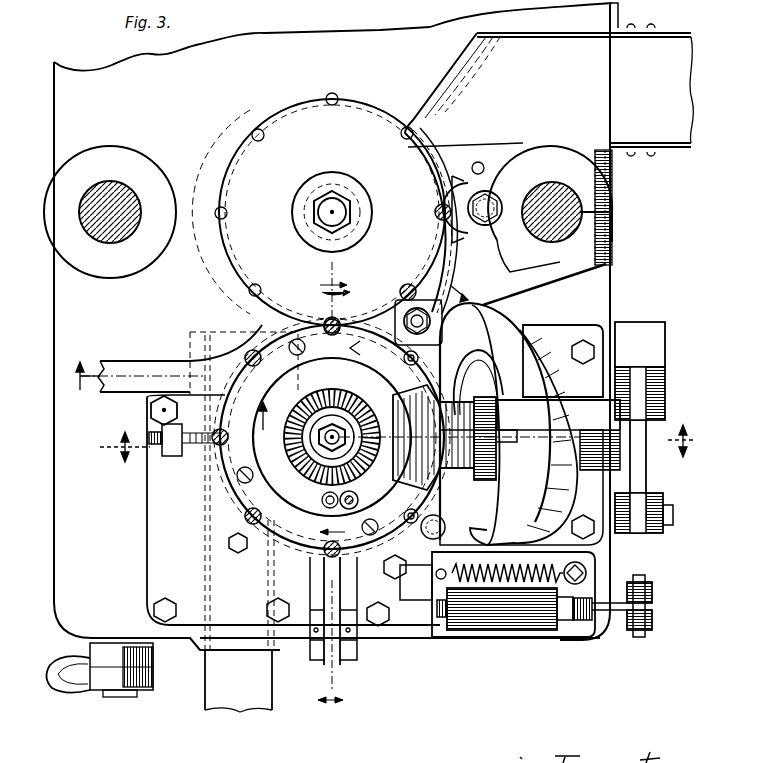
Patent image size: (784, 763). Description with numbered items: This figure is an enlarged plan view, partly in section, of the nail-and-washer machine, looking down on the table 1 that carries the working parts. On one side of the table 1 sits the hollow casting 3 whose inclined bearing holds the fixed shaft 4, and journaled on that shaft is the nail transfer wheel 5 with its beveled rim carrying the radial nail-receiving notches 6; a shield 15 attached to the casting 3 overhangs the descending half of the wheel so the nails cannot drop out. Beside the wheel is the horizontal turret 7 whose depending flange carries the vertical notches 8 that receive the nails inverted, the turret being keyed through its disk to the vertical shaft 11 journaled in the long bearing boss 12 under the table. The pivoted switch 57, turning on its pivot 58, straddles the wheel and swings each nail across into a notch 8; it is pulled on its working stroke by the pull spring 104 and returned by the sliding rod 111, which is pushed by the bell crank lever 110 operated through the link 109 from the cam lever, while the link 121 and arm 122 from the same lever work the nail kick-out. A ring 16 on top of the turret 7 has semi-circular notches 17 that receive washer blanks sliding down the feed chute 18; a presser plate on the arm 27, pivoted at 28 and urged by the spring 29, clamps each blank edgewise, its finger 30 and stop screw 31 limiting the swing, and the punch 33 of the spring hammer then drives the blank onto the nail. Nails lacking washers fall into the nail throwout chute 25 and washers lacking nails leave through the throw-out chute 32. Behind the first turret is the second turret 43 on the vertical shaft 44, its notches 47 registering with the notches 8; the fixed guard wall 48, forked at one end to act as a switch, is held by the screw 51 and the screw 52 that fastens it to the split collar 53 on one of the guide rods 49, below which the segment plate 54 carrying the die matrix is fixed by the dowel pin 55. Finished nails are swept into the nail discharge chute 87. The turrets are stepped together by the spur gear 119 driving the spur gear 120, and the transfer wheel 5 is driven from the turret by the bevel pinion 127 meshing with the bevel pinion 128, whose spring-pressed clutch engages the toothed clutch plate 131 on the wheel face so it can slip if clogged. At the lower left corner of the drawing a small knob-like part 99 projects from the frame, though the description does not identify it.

The table 1 is at (603, 288).
The hollow casting 3 is at (646, 478).
The fixed shaft 4 is at (169, 396).
The nail transfer wheel 5 is at (546, 488).
The nail-receiving notches 6 is at (408, 275).
The turret 7 is at (332, 437).
The vertical notches 8 is at (410, 355).
The vertical shaft 11 is at (334, 316).
The bearing boss 12 is at (401, 443).
The shield 15 is at (528, 287).
The ring 16 is at (415, 319).
The semi-circular notches 17 is at (409, 372).
The feed chute 18 is at (342, 650).
The nail throwout chute 25 is at (245, 700).
The arm 27 is at (210, 480).
The pivot 28 is at (225, 505).
The spring 29 is at (148, 412).
The finger 30 is at (183, 458).
The stop screw 31 is at (150, 446).
The throw-out chute 32 is at (145, 360).
The punch 33 is at (312, 437).
The second turret 43 is at (332, 212).
The vertical shaft 44 is at (336, 213).
The notches 47 is at (330, 105).
The guard wall 48 is at (458, 252).
The guide rods 49 is at (112, 195).
The screw 51 is at (412, 308).
The screw 52 is at (489, 191).
The split collar 53 is at (540, 160).
The segment plate 54 is at (560, 280).
The dowel pin 55 is at (478, 161).
The pivoted switch 57 is at (420, 583).
The pivot 58 is at (470, 612).
The nail discharge chute 87 is at (500, 90).
The knob 99 is at (58, 668).
The pull spring 104 is at (508, 610).
The link 109 is at (652, 616).
The bell crank lever 110 is at (618, 612).
The sliding rod 111 is at (442, 619).
The spur gear 119 is at (228, 162).
The spur gear 120 is at (205, 505).
The link 121 is at (622, 534).
The arm 122 is at (646, 462).
The bevel pinion 127 is at (262, 338).
The bevel pinion 128 is at (386, 395).
The toothed clutch plate 131 is at (520, 462).